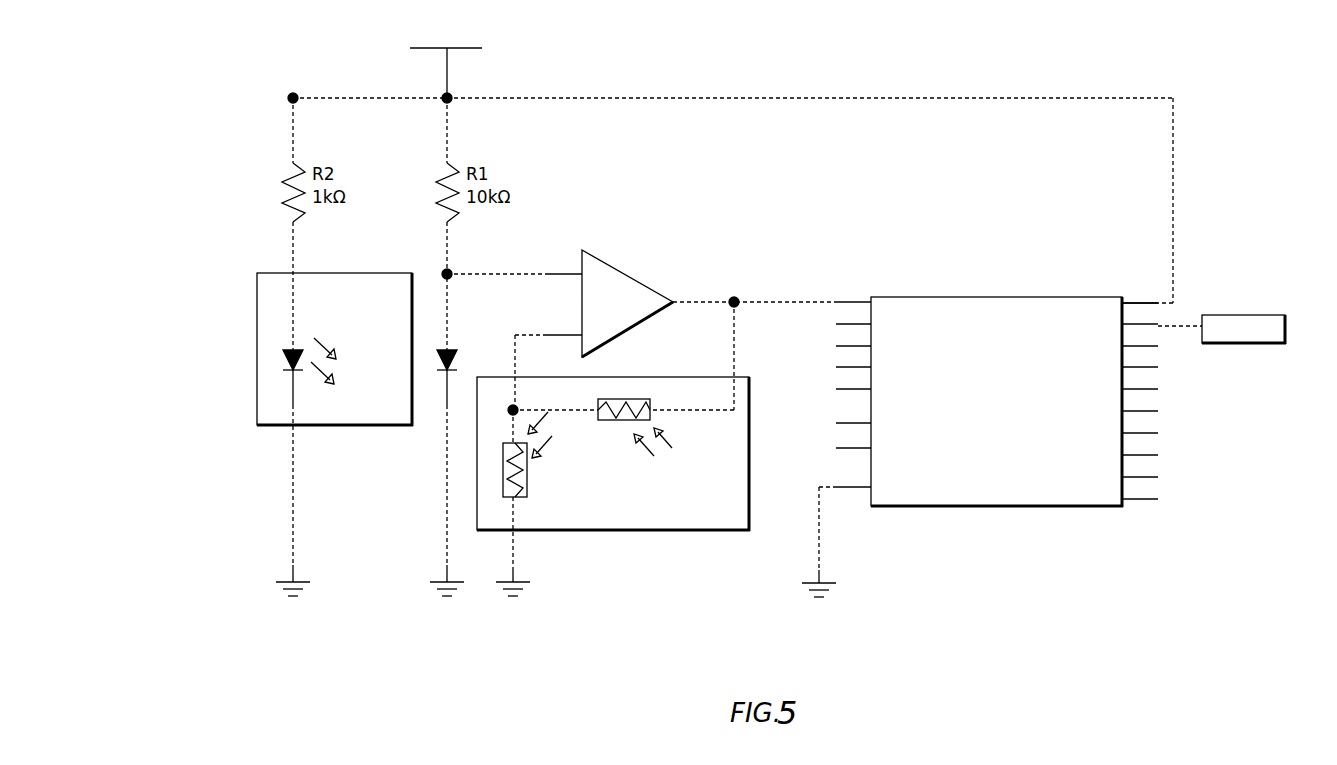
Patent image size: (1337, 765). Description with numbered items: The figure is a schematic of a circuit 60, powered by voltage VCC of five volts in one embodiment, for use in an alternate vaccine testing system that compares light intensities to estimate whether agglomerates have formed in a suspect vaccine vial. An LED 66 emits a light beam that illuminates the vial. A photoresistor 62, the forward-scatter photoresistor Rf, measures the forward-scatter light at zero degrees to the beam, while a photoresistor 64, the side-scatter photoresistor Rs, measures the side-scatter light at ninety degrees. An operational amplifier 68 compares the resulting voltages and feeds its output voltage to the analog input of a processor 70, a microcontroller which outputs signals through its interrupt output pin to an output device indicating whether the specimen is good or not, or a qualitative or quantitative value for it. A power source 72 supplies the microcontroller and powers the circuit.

The circuit 60 is at (884, 78).
The photoresistor 62 is at (517, 497).
The photoresistor 64 is at (650, 412).
The LED 66 is at (294, 327).
The operational amplifier 68 is at (628, 273).
The processor 70 is at (1017, 488).
The power source 72 is at (1105, 297).